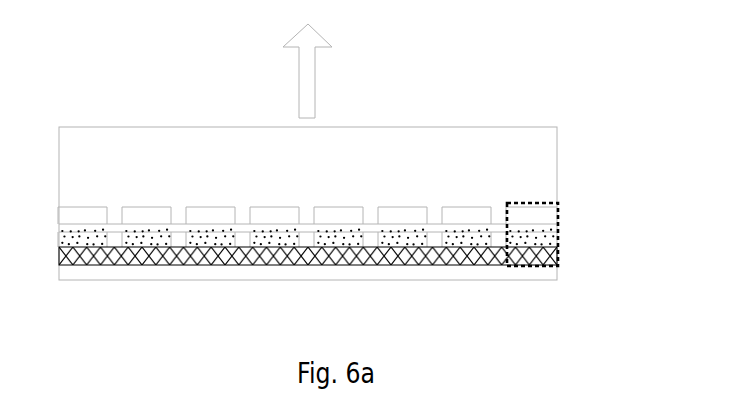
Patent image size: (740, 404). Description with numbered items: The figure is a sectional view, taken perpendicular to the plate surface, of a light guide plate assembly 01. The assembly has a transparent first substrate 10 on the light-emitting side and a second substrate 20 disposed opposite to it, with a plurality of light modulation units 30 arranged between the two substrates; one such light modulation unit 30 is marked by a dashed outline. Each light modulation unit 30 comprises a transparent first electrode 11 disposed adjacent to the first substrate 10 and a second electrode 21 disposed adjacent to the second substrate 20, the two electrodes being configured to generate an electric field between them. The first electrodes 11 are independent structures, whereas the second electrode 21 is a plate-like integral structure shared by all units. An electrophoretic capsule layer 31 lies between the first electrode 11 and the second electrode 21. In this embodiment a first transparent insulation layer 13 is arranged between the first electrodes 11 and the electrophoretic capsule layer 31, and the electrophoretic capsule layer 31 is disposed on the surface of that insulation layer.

The light guide plate assembly 01 is at (69, 46).
The first substrate 10 is at (540, 176).
The first electrode 11 is at (540, 213).
The first transparent insulation layer 13 is at (242, 214).
The electrophoretic capsule layer 31 is at (540, 238).
The second electrode 21 is at (540, 256).
The second substrate 20 is at (540, 271).
The light modulation unit 30 is at (508, 265).